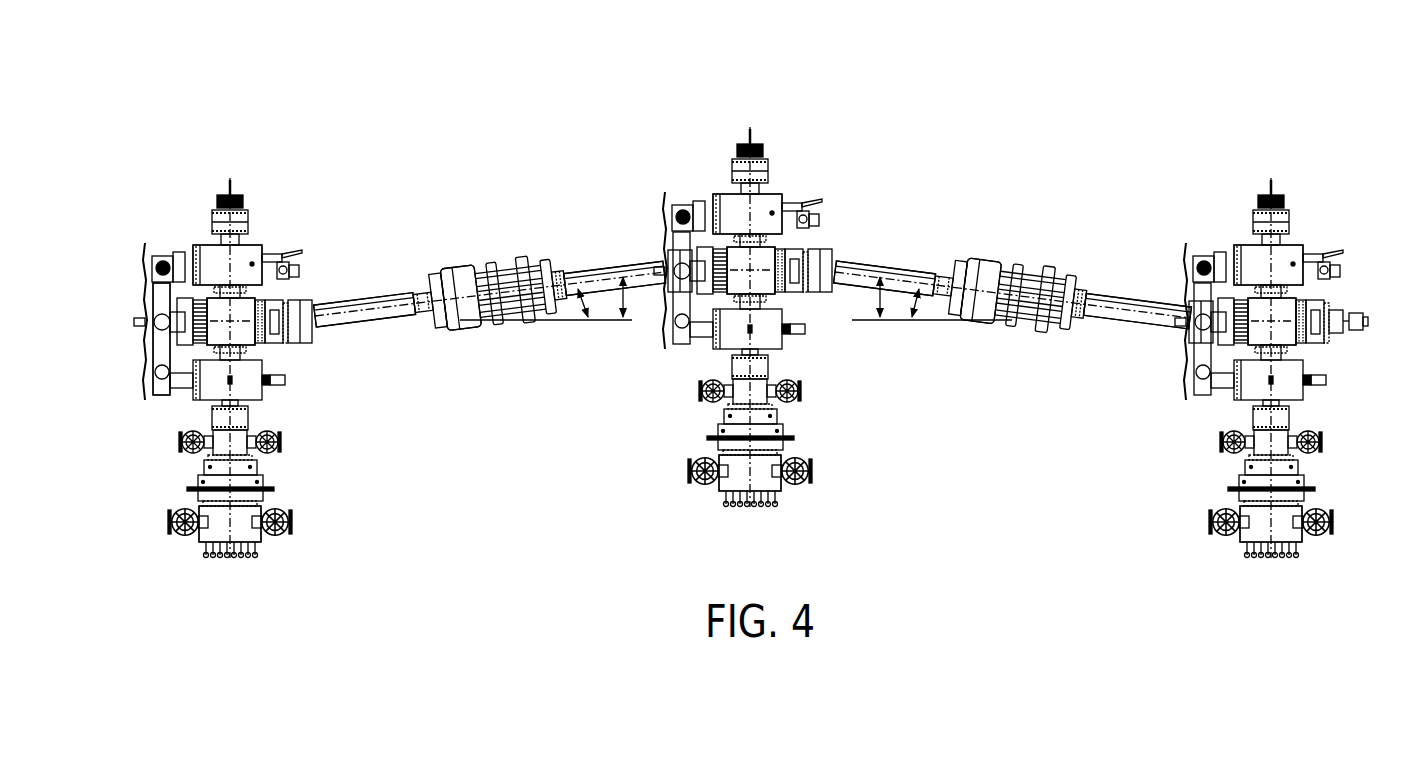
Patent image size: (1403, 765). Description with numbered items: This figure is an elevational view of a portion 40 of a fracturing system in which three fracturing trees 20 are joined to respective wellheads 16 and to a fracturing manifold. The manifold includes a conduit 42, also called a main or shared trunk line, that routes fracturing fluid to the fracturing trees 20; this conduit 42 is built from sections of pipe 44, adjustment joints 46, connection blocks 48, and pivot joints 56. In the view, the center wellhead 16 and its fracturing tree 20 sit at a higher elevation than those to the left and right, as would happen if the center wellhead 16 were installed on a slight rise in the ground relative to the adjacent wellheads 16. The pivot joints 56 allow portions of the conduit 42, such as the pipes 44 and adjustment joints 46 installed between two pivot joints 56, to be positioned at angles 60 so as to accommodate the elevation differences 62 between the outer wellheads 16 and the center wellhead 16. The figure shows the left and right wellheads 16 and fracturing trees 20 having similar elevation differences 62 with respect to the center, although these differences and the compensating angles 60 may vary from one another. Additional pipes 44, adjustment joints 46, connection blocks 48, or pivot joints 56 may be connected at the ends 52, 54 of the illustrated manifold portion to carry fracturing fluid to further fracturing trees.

The wellhead 16 is at (201, 479).
The fracturing tree 20 is at (302, 292).
The portion of the fracturing system 40 is at (1190, 58).
The conduit 42 is at (456, 262).
The pipe 44 is at (590, 275).
The adjustment joint 46 is at (465, 327).
The connection block 48 is at (243, 337).
The end of the manifold portion 52 is at (1312, 333).
The end of the manifold portion 54 is at (183, 350).
The pivot joint 56 is at (305, 305).
The angle 60 is at (582, 320).
The elevation difference 62 is at (624, 320).